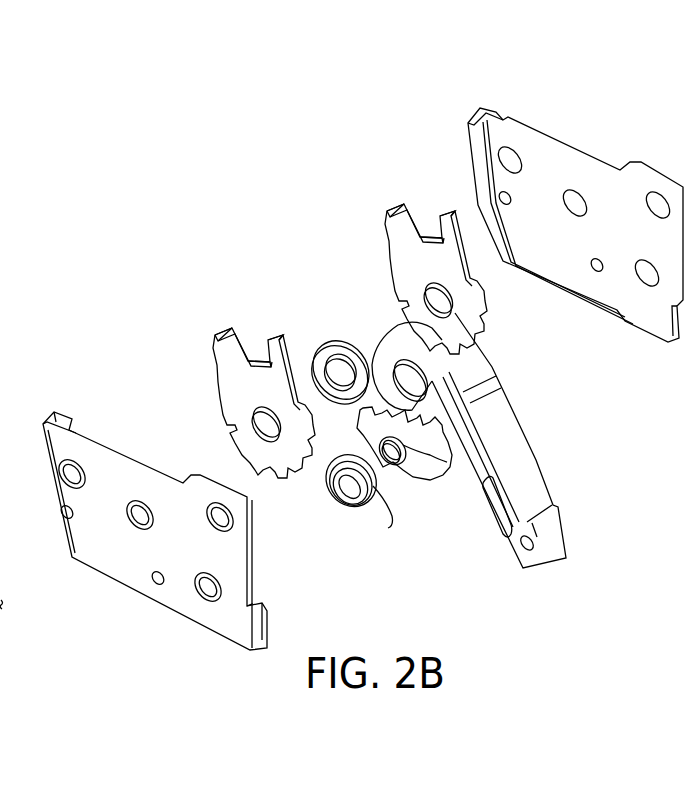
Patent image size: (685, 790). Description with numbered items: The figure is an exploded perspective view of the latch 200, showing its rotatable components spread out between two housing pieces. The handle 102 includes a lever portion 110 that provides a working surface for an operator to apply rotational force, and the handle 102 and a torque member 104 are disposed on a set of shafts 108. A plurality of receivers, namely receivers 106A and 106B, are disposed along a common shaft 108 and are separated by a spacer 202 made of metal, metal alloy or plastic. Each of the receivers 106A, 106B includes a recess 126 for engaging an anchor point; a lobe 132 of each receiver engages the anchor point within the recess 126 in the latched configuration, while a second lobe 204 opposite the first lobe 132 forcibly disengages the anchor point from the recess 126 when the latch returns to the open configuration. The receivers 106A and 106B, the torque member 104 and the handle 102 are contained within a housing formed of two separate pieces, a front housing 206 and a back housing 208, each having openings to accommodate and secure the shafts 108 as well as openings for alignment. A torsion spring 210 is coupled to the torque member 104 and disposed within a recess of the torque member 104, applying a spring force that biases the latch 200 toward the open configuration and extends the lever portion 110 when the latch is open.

The latch 200 is at (403, 102).
The handle 102 is at (469, 440).
The torque member 104 is at (440, 480).
The receiver 106A is at (276, 395).
The receiver 106B is at (448, 271).
The shafts 108 is at (130, 500).
The lever portion 110 is at (512, 426).
The recess 126 is at (258, 338).
The lobe 132 is at (218, 330).
The spacer 202 is at (338, 341).
The second lobe 204 is at (277, 339).
The front housing 206 is at (122, 552).
The back housing 208 is at (558, 243).
The torsion spring 210 is at (361, 508).